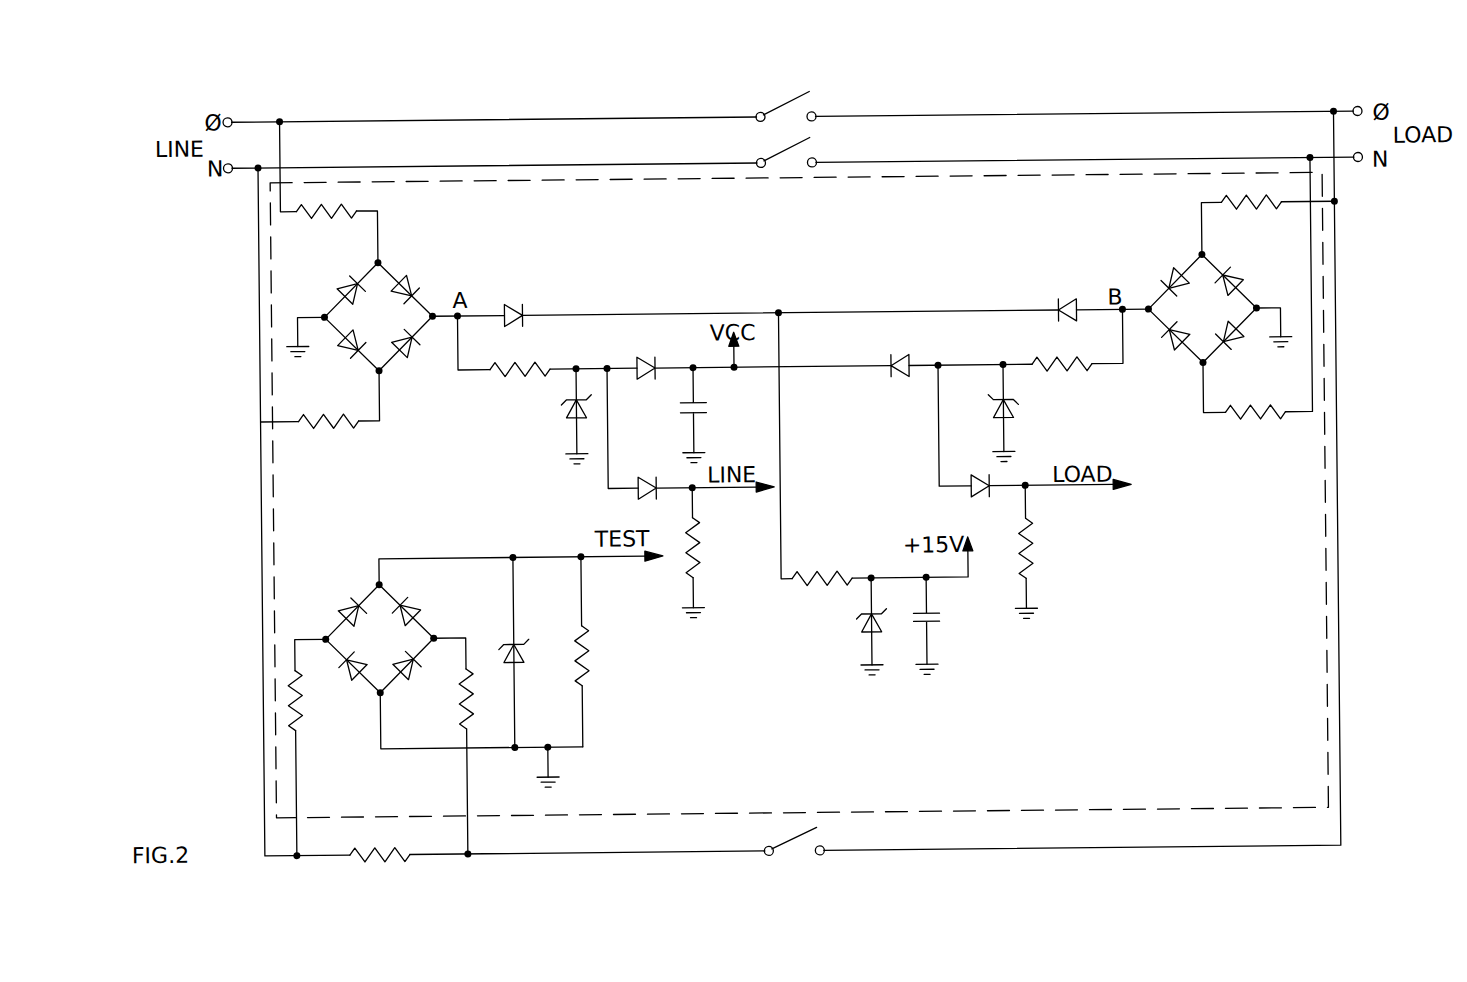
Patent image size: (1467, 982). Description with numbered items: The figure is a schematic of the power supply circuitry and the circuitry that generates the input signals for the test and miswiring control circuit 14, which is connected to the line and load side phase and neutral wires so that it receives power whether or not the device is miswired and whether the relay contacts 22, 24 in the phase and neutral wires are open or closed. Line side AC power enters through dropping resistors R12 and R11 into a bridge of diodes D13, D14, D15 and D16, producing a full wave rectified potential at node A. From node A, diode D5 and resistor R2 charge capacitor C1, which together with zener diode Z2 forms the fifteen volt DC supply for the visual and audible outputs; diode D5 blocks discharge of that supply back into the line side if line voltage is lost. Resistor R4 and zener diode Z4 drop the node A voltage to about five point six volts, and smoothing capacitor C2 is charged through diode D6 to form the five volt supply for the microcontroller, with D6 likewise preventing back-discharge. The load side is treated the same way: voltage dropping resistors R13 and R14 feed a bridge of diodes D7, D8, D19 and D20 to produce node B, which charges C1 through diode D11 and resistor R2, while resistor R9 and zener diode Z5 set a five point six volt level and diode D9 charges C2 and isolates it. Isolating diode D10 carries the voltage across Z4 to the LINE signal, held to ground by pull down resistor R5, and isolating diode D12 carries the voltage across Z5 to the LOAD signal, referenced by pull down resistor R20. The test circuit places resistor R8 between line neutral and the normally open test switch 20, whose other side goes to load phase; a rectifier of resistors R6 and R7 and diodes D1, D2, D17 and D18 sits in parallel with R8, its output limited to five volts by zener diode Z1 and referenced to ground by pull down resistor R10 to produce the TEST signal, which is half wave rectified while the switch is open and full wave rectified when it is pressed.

The test and miswiring control circuit 14 is at (271, 720).
The test switch 20 is at (805, 836).
The relay contact 22 is at (782, 110).
The relay contact 24 is at (783, 157).
The dropping resistor R12 is at (329, 192).
The dropping resistor R11 is at (320, 413).
The voltage dropping resistor R13 is at (1268, 224).
The voltage dropping resistor R14 is at (1257, 301).
The resistor R4 is at (520, 358).
The resistor R9 is at (1062, 352).
The pull down resistor R5 is at (708, 552).
The pull down resistor R20 is at (1048, 552).
The resistor R2 is at (822, 567).
The resistor R6 is at (310, 747).
The resistor R7 is at (471, 746).
The resistor R8 is at (380, 843).
The pull down resistor R10 is at (605, 651).
The diode D13 is at (334, 283).
The diode D16 is at (424, 283).
The diode D15 is at (338, 358).
The diode D14 is at (417, 357).
The diode D5 is at (515, 301).
The diode D6 is at (650, 353).
The diode D9 is at (902, 352).
The isolating diode D10 is at (649, 474).
The diode D11 is at (1070, 296).
The isolating diode D12 is at (970, 472).
The diode D19 is at (1157, 276).
The diode D7 is at (1248, 281).
The diode D8 is at (1166, 347).
The diode D20 is at (1240, 350).
The diode D17 is at (337, 605).
The diode D18 is at (426, 605).
The diode D1 is at (421, 675).
The diode D2 is at (342, 675).
The zener diode Z1 is at (524, 652).
The zener diode Z2 is at (854, 627).
The zener diode Z4 is at (561, 417).
The zener diode Z5 is at (1024, 413).
The capacitor C1 is at (942, 626).
The smoothing capacitor C2 is at (711, 415).